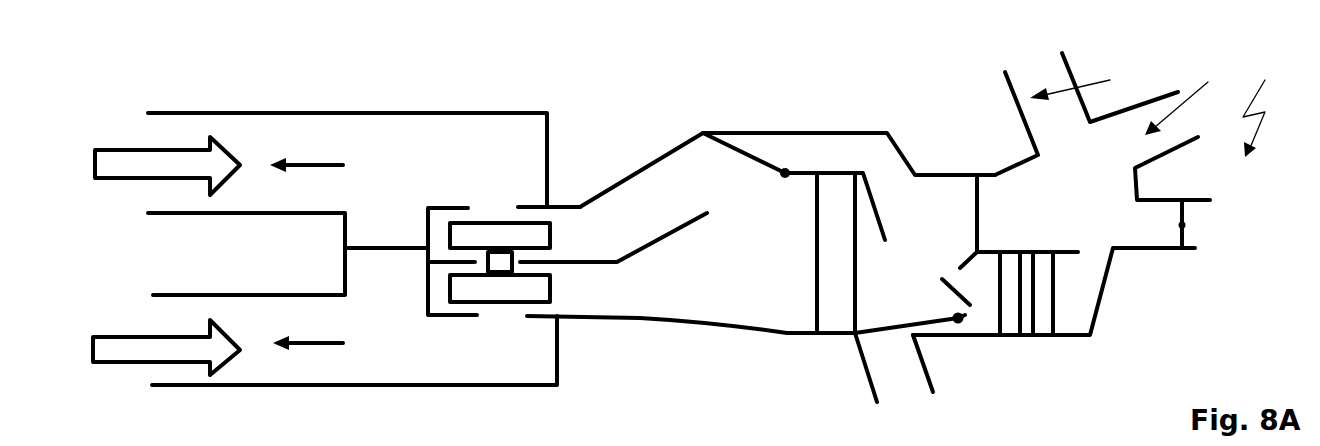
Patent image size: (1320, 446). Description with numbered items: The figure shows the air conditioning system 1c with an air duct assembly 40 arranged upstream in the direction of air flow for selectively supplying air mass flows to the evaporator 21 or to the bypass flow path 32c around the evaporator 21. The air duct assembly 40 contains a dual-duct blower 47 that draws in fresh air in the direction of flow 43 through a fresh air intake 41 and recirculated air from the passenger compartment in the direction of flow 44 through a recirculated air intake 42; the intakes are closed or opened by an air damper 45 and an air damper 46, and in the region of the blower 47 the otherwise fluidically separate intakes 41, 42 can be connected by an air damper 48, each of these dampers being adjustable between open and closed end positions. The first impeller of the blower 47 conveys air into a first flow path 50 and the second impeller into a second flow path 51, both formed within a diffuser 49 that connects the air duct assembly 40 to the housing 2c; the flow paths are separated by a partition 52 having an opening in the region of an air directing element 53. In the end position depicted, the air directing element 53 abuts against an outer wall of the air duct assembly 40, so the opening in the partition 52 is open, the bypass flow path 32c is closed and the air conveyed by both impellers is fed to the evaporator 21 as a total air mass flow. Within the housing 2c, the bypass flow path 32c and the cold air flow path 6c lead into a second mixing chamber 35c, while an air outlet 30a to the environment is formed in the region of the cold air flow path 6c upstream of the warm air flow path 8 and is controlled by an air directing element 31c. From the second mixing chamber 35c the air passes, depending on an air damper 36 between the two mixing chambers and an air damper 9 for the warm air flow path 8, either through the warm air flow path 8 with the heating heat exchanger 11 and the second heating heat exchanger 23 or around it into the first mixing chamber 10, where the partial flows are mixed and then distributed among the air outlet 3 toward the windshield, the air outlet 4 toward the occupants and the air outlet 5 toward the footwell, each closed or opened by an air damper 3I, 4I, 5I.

The air duct assembly 40 is at (572, 126).
The fresh air intake 41 is at (247, 185).
The recirculated air intake 42 is at (248, 358).
The direction of flow of fresh air 43 is at (193, 160).
The direction of flow of recirculated air 44 is at (195, 348).
The air damper for fresh air intake 45 is at (307, 165).
The air damper for recirculated air intake 46 is at (308, 343).
The dual-duct blower 47 is at (522, 292).
The air damper for intake to impeller 48 is at (387, 247).
The diffuser 49 is at (630, 346).
The first flow path 50 is at (575, 245).
The second flow path 51 is at (575, 302).
The partition 52 is at (660, 237).
The air directing element 53 is at (752, 160).
The bypass flow path 32c is at (840, 164).
The evaporator 21 is at (835, 297).
The cold air flow path 6c is at (860, 279).
The air outlet to environment 30a is at (880, 370).
The air directing element for air outlet to environment 31c is at (935, 320).
The air damper for warm air flow path 9 is at (956, 293).
The first heating heat exchanger 11 is at (1012, 303).
The second heating heat exchanger 23 is at (1043, 303).
The warm air flow path 8 is at (1069, 302).
The air damper for mixing chamber 36 is at (977, 215).
The second mixing chamber 35c is at (913, 240).
The housing 2c is at (1012, 162).
The air outlet directed toward the windshield 3 is at (1049, 127).
The air damper for air outlet 3 3I is at (1082, 85).
The air damper for air outlet 4 4I is at (1188, 95).
The air outlet directed toward the occupants 4 is at (1117, 154).
The first mixing chamber 10 is at (1070, 204).
The air outlet directed toward a footwell 5 is at (1145, 237).
The air damper for air outlet 5 5I is at (1182, 225).
The air conditioning system 1c is at (1266, 103).